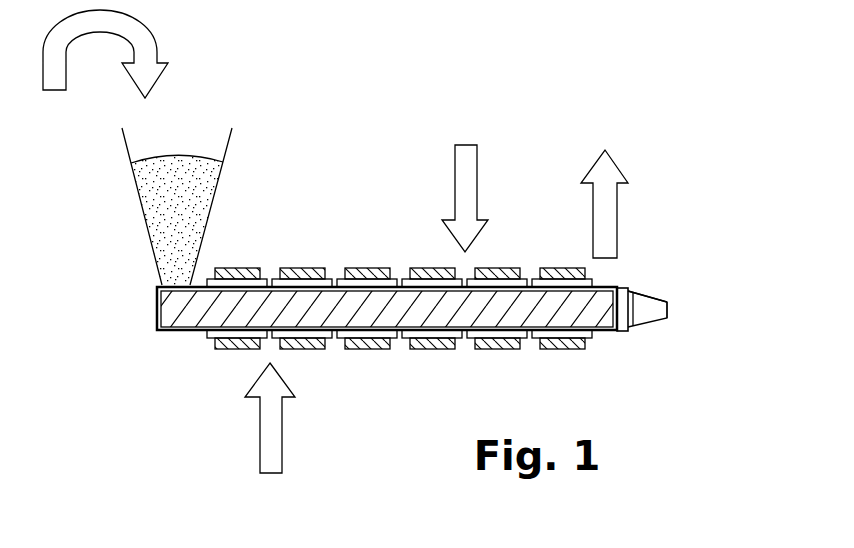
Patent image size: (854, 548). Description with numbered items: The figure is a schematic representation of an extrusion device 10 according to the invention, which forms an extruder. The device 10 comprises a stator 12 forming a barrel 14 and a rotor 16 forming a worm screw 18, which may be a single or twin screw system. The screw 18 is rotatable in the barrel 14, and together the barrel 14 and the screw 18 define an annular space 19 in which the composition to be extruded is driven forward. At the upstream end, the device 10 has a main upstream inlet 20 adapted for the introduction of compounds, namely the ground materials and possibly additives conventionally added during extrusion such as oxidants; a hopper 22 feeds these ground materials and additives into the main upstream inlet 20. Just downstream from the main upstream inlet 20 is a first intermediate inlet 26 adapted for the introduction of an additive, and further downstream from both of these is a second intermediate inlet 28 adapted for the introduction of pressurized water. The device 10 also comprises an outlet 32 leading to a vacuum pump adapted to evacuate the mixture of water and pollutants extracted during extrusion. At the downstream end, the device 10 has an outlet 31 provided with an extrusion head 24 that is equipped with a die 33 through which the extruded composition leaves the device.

The extrusion device 10 is at (658, 138).
The stator 12 is at (567, 255).
The barrel 14 is at (643, 288).
The rotor 16 is at (455, 322).
The worm screw 18 is at (498, 307).
The annular space 19 is at (365, 297).
The main upstream inlet 20 is at (203, 268).
The hopper 22 is at (202, 130).
The extrusion head 24 is at (655, 296).
The first intermediate inlet 26 is at (268, 347).
The second intermediate inlet 28 is at (464, 277).
The outlet 31 is at (648, 283).
The outlet 32 is at (598, 281).
The die 33 is at (633, 312).